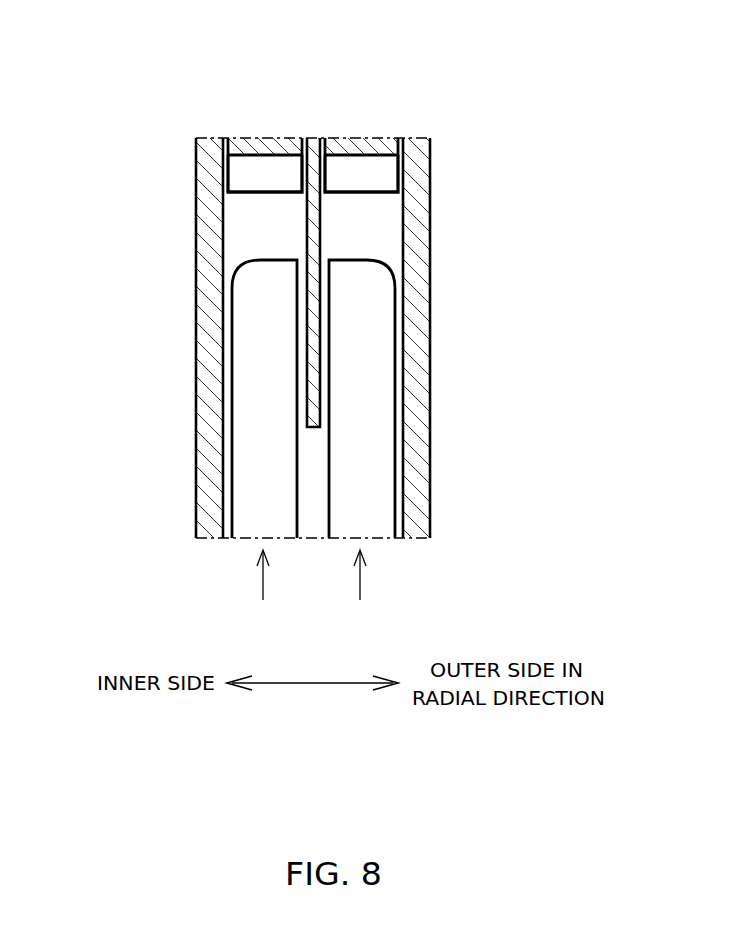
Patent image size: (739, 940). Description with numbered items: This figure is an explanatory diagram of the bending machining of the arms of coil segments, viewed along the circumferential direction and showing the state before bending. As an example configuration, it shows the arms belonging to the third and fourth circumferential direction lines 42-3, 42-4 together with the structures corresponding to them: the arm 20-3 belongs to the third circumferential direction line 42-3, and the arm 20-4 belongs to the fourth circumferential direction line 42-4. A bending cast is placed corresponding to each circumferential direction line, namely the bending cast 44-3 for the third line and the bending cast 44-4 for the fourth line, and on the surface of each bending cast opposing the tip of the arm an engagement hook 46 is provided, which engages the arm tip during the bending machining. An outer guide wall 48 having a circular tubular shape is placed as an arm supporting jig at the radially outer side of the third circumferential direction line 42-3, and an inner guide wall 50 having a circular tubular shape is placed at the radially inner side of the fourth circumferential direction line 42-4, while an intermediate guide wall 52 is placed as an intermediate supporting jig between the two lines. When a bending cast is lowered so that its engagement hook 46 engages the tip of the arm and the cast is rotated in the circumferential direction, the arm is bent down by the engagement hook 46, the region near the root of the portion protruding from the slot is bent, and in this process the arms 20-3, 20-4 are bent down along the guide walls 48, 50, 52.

The arm belonging to the third circumferential direction line 20-3 is at (364, 467).
The arm belonging to the fourth circumferential direction line 20-4 is at (262, 467).
The third circumferential direction line 42-3 is at (366, 592).
The fourth circumferential direction line 42-4 is at (267, 592).
The bending cast corresponding to the third circumferential direction line 44-3 is at (375, 145).
The bending cast corresponding to the fourth circumferential direction line 44-4 is at (253, 145).
The engagement hook 46 is at (245, 183).
The outer guide wall 48 is at (423, 360).
The inner guide wall 50 is at (203, 361).
The intermediate guide wall 52 is at (312, 242).